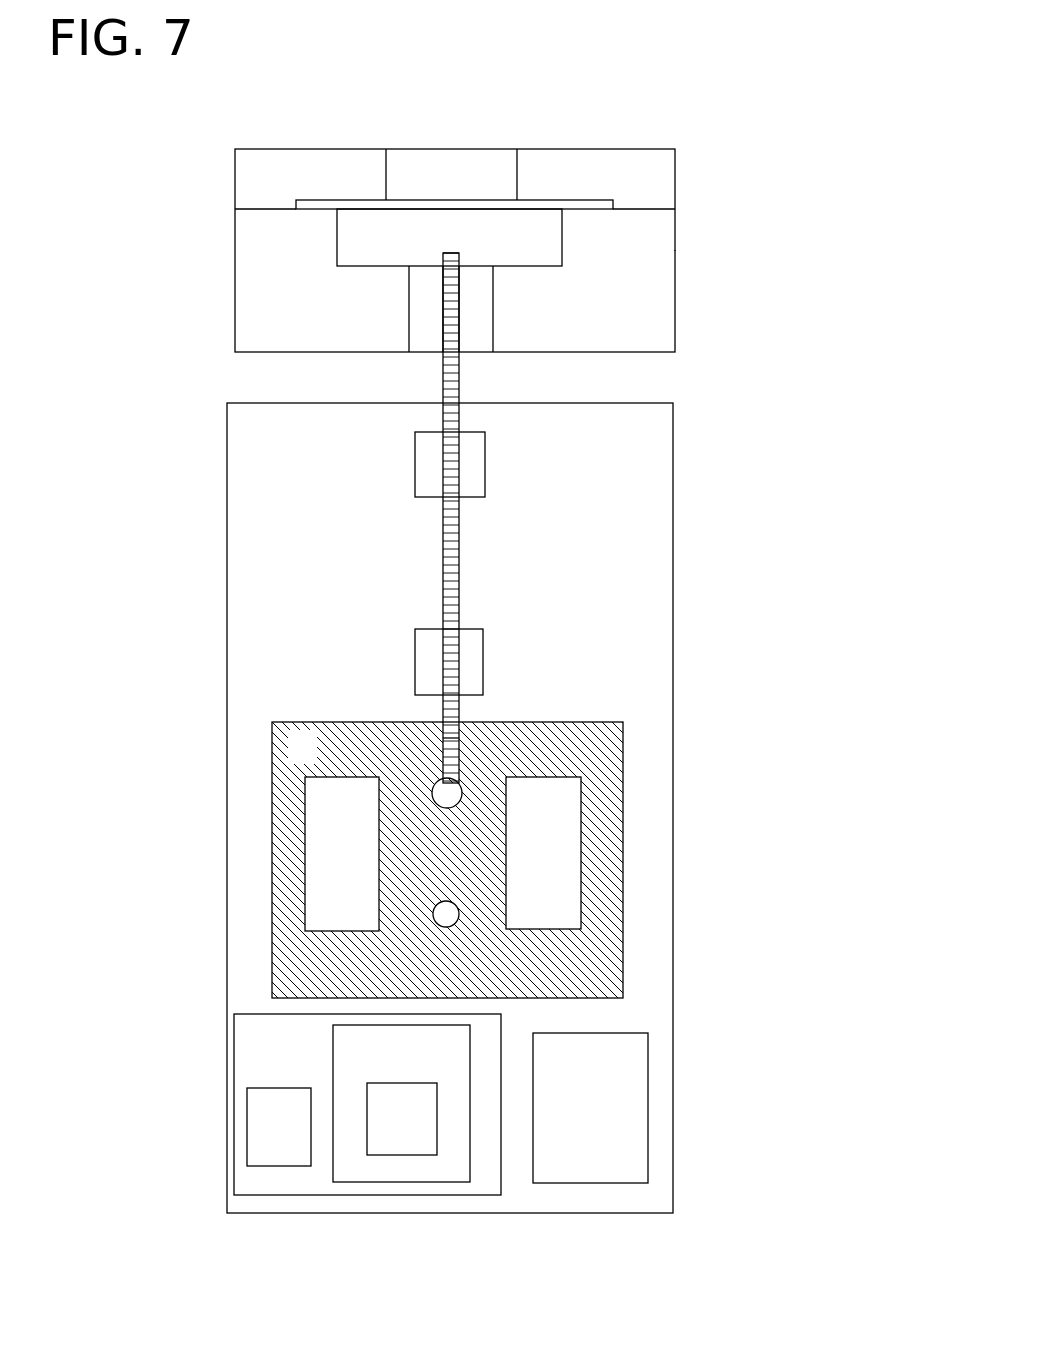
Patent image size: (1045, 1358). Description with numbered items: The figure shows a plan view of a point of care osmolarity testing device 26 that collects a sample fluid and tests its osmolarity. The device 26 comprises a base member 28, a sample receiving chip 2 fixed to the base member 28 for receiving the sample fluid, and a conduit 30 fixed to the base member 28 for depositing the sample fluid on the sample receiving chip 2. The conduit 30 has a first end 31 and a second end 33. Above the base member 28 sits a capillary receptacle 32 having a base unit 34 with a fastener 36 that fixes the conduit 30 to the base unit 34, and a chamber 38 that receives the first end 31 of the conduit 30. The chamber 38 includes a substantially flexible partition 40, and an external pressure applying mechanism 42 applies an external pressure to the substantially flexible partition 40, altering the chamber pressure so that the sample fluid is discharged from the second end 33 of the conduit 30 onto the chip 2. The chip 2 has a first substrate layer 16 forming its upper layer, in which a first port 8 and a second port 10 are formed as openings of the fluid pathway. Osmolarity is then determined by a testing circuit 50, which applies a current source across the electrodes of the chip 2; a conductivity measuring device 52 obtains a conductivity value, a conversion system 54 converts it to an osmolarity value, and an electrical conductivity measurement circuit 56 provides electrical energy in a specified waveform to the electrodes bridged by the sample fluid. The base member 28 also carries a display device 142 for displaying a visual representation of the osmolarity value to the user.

The sample receiving chip 2 is at (293, 762).
The first port 8 is at (457, 778).
The second port 10 is at (447, 927).
The first substrate layer 16 is at (581, 855).
The point of care osmolarity testing device 26 is at (802, 259).
The base member 28 is at (285, 548).
The conduit 30 is at (459, 383).
The first end 31 is at (455, 253).
The capillary receptacle 32 is at (193, 240).
The second end 33 is at (457, 738).
The base unit 34 is at (257, 273).
The fastener 36 is at (409, 307).
The chamber 38 is at (379, 245).
The substantially flexible partition 40 is at (540, 200).
The external pressure applying mechanism 42 is at (452, 165).
The testing circuit 50 is at (248, 1075).
The conductivity measuring device 52 is at (348, 1068).
The conversion system 54 is at (260, 1133).
The electrical conductivity measurement circuit 56 is at (383, 1131).
The display device 142 is at (565, 1113).